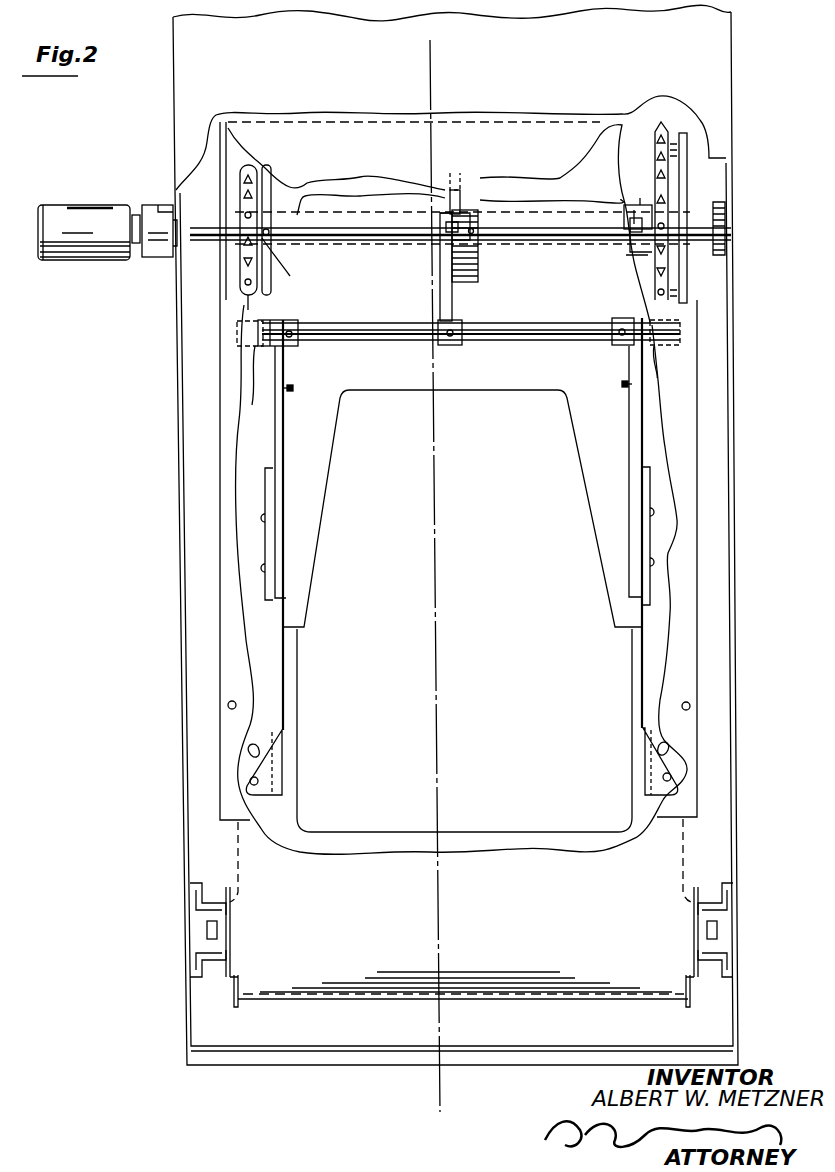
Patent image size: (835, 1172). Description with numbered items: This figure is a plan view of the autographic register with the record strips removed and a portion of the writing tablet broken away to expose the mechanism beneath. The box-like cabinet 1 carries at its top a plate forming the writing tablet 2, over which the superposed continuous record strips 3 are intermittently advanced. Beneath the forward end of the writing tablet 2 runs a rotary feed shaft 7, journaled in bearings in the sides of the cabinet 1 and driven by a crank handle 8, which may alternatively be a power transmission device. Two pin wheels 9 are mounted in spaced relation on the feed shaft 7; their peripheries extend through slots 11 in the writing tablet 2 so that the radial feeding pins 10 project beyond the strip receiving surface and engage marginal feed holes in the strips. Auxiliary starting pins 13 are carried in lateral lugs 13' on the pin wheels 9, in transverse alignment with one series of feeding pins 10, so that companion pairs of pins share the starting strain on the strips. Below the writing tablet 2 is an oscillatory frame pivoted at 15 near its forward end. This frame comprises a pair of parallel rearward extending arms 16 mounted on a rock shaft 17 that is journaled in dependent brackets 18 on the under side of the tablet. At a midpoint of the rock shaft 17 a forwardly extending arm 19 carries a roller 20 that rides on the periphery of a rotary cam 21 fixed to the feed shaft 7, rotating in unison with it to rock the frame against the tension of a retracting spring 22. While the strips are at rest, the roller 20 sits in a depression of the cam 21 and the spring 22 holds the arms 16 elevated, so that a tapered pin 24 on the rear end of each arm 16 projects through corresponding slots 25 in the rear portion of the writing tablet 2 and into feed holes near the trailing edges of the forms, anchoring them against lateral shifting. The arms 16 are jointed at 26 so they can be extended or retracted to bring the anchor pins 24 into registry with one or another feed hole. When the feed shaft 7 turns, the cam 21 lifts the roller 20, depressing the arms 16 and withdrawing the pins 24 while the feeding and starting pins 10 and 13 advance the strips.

The cabinet 1 is at (192, 532).
The writing tablet 2 is at (236, 607).
The record strips 3 is at (422, 47).
The rotary feed shaft 7 is at (342, 240).
The crank handle 8 is at (74, 258).
The pin wheels 9 is at (244, 273).
The feeding pins 10 is at (244, 285).
The slots 11 is at (250, 292).
The auxiliary starting pins 13 is at (457, 253).
The lateral lugs 13' is at (605, 248).
The pivot 15 is at (296, 340).
The rearward extending arms 16 is at (284, 677).
The rock shaft 17 is at (364, 340).
The dependent brackets 18 is at (672, 378).
The forwardly extending arm 19 is at (453, 298).
The roller 20 is at (470, 252).
The rotary cam 21 is at (448, 210).
The retracting spring 22 is at (288, 392).
The tapered pin 24 is at (260, 782).
The slots 25 is at (252, 752).
The joint 26 is at (278, 536).